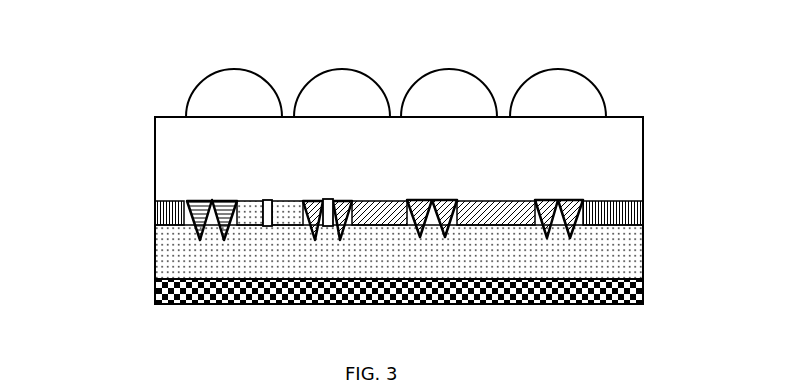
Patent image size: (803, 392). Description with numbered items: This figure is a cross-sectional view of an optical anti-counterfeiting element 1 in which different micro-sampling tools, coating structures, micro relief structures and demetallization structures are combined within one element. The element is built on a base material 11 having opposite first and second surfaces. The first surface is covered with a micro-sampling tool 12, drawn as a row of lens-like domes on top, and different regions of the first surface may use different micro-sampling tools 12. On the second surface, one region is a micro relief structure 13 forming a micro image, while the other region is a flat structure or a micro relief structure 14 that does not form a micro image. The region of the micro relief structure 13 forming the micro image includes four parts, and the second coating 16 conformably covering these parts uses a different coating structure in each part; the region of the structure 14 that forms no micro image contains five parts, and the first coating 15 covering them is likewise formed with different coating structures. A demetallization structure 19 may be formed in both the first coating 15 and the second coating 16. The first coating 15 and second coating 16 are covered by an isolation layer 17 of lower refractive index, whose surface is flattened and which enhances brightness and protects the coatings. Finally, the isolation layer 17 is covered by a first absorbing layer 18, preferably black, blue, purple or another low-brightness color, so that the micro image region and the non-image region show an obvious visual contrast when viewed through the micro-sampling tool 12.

The optical anti-counterfeiting element 1 is at (693, 39).
The base material 11 is at (618, 140).
The micro-sampling tool 12 is at (218, 95).
The micro relief structure forming the micro image 13 is at (557, 198).
The micro relief structure not forming the micro image 14 is at (182, 200).
The first coating 15 is at (160, 211).
The second coating 16 is at (583, 225).
The isolation layer 17 is at (625, 263).
The first absorbing layer 18 is at (623, 292).
The demetallization structure 19 is at (325, 201).